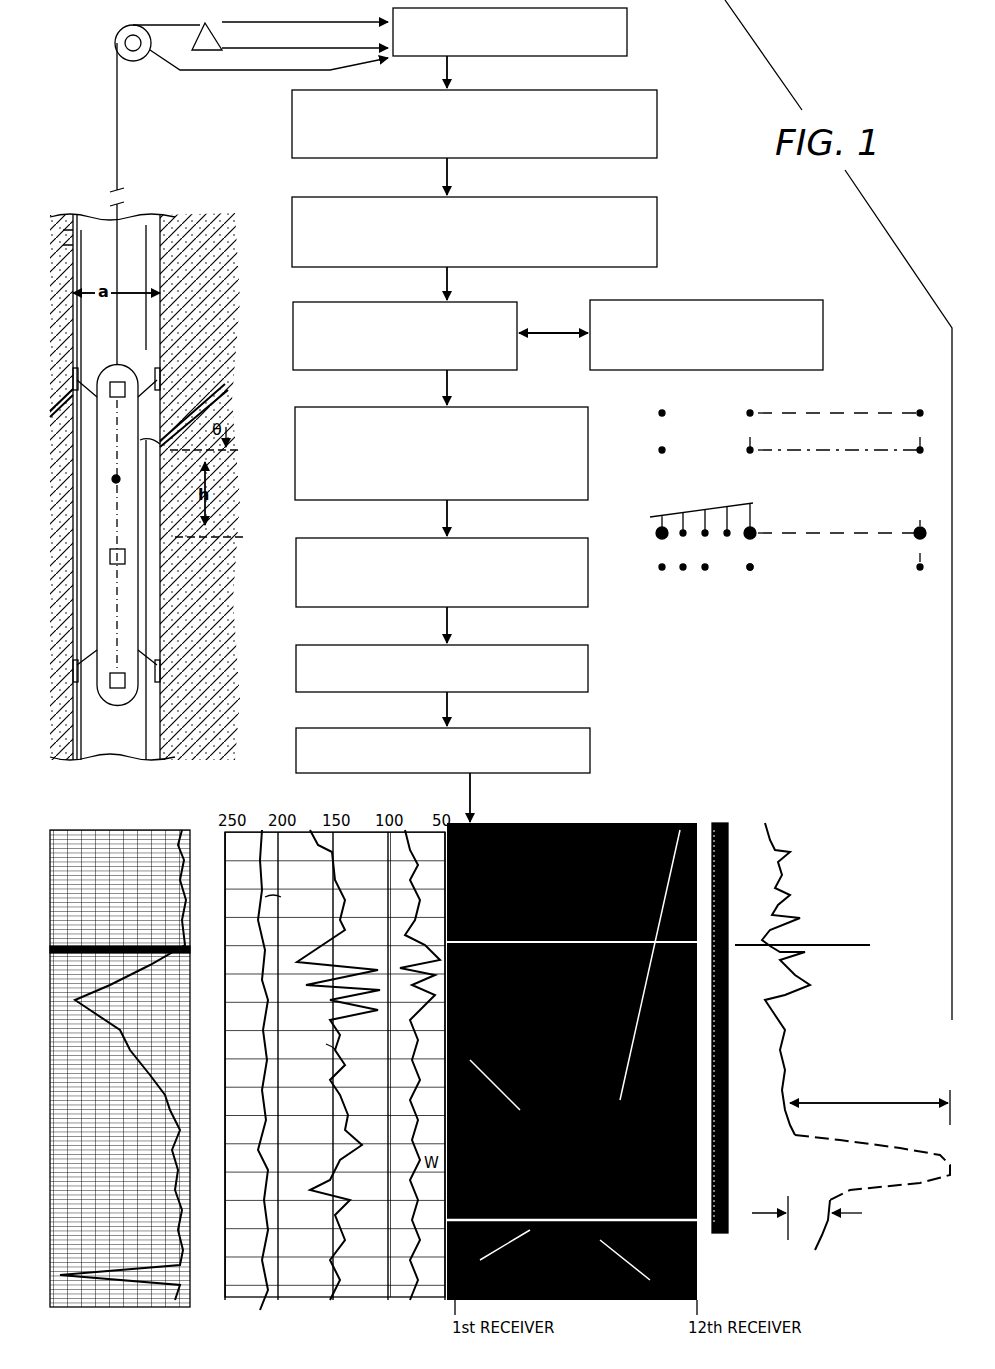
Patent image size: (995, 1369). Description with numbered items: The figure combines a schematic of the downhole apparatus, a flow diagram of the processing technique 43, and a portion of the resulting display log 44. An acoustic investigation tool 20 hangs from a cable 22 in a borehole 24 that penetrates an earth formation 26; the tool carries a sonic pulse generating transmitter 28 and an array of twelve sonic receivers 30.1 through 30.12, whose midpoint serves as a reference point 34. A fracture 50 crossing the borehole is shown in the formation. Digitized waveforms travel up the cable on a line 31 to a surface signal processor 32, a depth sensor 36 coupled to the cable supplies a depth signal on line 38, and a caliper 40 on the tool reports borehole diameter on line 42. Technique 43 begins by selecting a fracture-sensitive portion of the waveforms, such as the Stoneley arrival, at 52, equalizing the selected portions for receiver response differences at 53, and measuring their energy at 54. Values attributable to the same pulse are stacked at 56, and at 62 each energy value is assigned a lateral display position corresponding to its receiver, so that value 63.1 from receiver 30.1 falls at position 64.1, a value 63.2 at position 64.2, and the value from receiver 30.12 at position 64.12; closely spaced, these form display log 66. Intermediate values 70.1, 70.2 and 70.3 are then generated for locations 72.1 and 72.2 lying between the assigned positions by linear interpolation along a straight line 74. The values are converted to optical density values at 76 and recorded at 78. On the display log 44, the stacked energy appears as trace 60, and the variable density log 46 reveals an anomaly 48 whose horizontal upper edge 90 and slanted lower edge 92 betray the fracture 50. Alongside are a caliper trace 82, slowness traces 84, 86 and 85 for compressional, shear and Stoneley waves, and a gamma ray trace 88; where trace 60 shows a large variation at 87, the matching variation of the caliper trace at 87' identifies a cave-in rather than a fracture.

The acoustic investigation tool 20 is at (138, 632).
The cable 22 is at (118, 155).
The borehole 24 is at (160, 248).
The earth formation 26 is at (205, 332).
The sonic pulse generating transmitter 28 is at (117, 705).
The first sonic receiver 30.1 is at (125, 557).
The twelfth sonic receiver 30.12 is at (125, 390).
The waveform line 31 is at (288, 52).
The signal processor 32 is at (627, 32).
The reference point 34 is at (116, 479).
The depth sensor 36 is at (133, 60).
The depth signal line 38 is at (172, 80).
The caliper 40 is at (77, 365).
The caliper signal line 42 is at (365, 22).
The technique 43 is at (740, 230).
The display log 44 is at (795, 802).
The variable density log 46 is at (588, 823).
The anomaly 48 is at (826, 1168).
The fracture 50 is at (220, 393).
The fracture sensitive portion selection step 52 is at (657, 112).
The equalization step 53 is at (657, 216).
The energy measurement step 54 is at (517, 310).
The stacking step 56 is at (772, 300).
The stacked energy trace 60 is at (790, 852).
The lateral position assignment step 62 is at (295, 407).
The first receiver parameter value 63.1 is at (685, 511).
The second receiver parameter value 63.2 is at (752, 516).
The first receiver display position 64.1 is at (665, 410).
The second receiver display position 64.2 is at (752, 410).
The twelfth receiver display position 64.12 is at (919, 406).
The display log with close spacings 66 is at (296, 538).
The first intermediate parameter value 70.1 is at (683, 540).
The second intermediate parameter value 70.2 is at (705, 540).
The third intermediate parameter value 70.3 is at (752, 565).
The first intermediate display location 72.1 is at (686, 515).
The second intermediate display location 72.2 is at (708, 510).
The straight line 74 is at (752, 510).
The optical value conversion step 76 is at (296, 645).
The recording step 78 is at (296, 735).
The caliper trace 82 is at (62, 830).
The compressional slowness trace 84 is at (416, 1087).
The Stoneley slowness trace 85 is at (274, 1087).
The shear slowness trace 86 is at (338, 1087).
The stacked trace variation 87 is at (814, 925).
The caliper trace variation 87' is at (133, 938).
The gamma ray trace 88 is at (175, 1300).
The upper edge of anomaly 90 is at (430, 1150).
The lower edge of anomaly 92 is at (430, 1172).